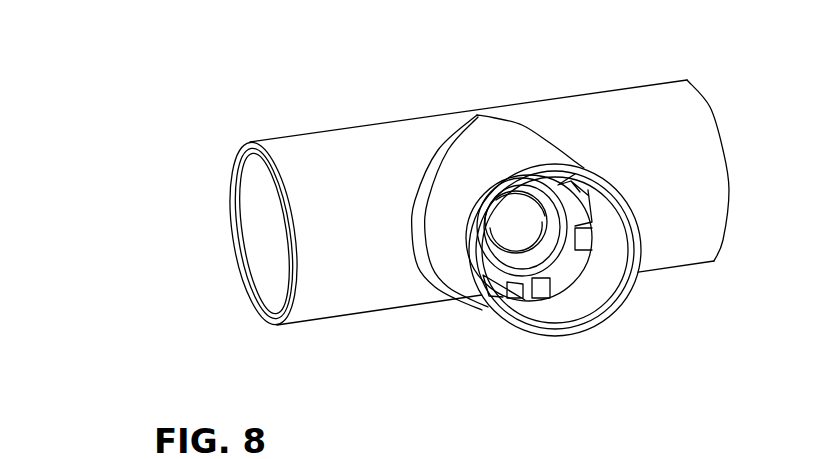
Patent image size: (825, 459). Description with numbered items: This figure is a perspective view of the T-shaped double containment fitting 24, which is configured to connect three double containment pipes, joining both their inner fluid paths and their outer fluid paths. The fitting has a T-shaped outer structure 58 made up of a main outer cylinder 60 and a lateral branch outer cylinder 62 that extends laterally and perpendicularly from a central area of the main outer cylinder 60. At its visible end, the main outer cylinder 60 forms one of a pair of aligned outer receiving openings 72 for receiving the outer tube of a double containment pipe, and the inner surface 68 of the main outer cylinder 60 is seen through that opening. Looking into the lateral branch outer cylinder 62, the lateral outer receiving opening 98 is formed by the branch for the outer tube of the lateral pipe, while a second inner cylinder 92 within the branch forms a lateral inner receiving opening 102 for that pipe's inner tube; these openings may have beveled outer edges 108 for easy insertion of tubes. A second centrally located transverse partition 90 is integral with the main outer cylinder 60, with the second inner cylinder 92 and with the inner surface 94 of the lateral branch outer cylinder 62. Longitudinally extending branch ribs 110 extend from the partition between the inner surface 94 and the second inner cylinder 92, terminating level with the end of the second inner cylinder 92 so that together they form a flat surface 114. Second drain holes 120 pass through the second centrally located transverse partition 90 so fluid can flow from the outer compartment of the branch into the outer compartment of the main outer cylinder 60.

The T-shaped double containment fitting 24 is at (380, 82).
The T-shaped outer structure 58 is at (716, 112).
The main outer cylinder 60 is at (380, 313).
The lateral branch outer cylinder 62 is at (637, 202).
The inner surface 68 is at (257, 212).
The outer receiving openings 72 is at (266, 248).
The second centrally located transverse partition 90 is at (558, 178).
The second inner cylinder 92 is at (643, 271).
The inner surface 94 is at (603, 282).
The lateral outer receiving opening 98 is at (584, 295).
The lateral inner receiving opening 102 is at (535, 252).
The beveled outer edges 108 is at (570, 330).
The longitudinally extending branch ribs 110 is at (578, 212).
The flat surface 114 is at (546, 273).
The second drain holes 120 is at (584, 220).